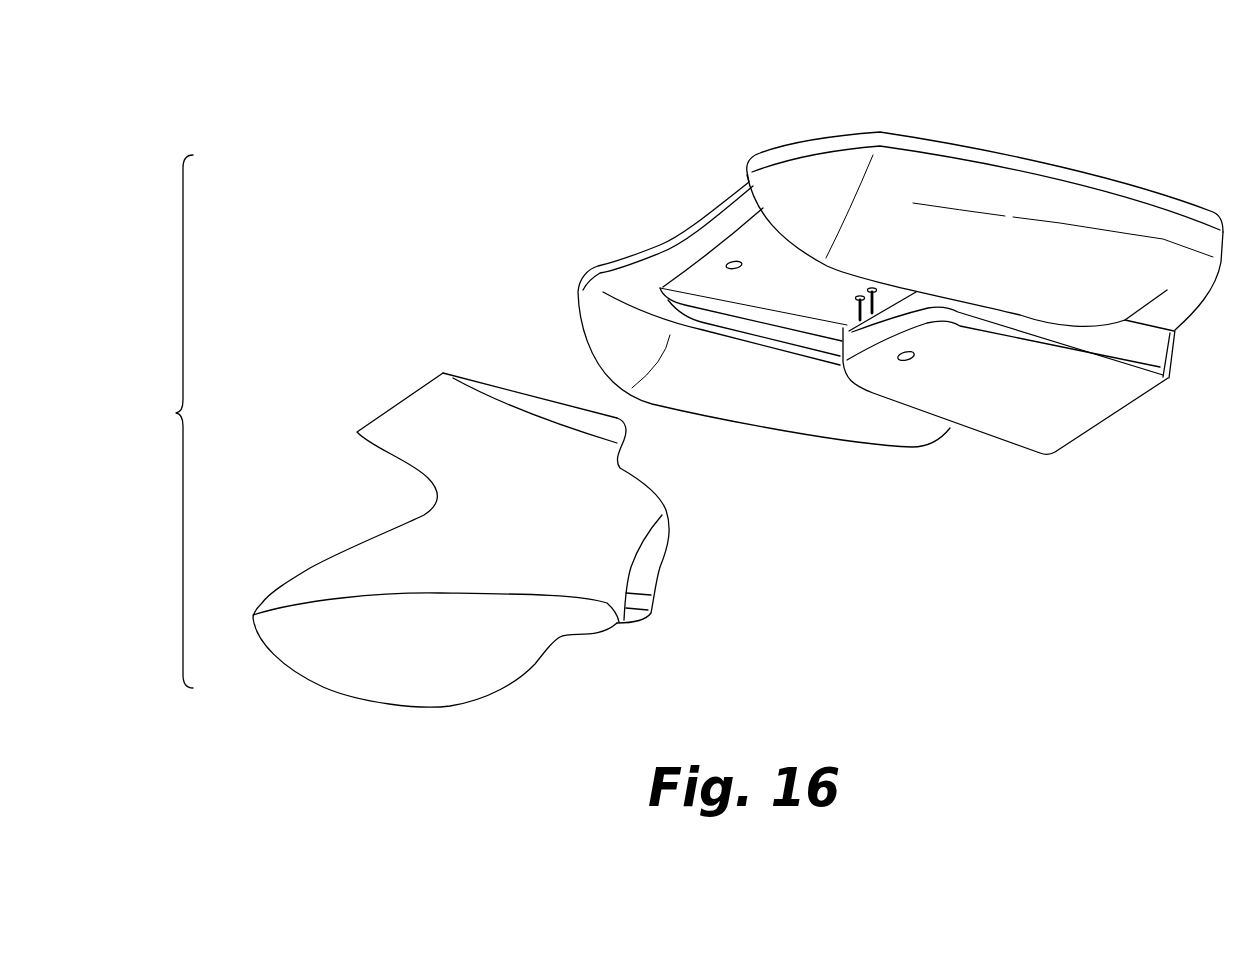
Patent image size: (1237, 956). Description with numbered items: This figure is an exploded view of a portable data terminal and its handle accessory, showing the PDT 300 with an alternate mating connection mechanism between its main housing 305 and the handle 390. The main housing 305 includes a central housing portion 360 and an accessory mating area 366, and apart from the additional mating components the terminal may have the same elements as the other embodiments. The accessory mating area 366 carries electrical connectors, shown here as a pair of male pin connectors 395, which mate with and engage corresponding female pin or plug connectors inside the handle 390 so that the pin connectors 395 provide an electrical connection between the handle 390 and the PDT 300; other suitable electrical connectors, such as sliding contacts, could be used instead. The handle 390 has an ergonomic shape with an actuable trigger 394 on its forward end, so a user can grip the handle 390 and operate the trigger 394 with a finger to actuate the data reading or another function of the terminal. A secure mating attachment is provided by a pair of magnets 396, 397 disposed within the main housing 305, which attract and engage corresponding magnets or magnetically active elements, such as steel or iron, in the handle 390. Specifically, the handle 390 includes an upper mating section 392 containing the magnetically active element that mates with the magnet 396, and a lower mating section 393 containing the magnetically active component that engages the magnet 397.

The PDT 300 is at (900, 280).
The main housing 305 is at (812, 143).
The central housing portion 360 is at (1010, 412).
The accessory mating area 366 is at (768, 330).
The handle 390 is at (492, 535).
The upper mating section 392 is at (570, 415).
The lower mating section 393 is at (638, 470).
The trigger 394 is at (660, 567).
The male pin connectors 395 is at (856, 306).
The magnet 396 is at (727, 267).
The magnet 397 is at (906, 362).